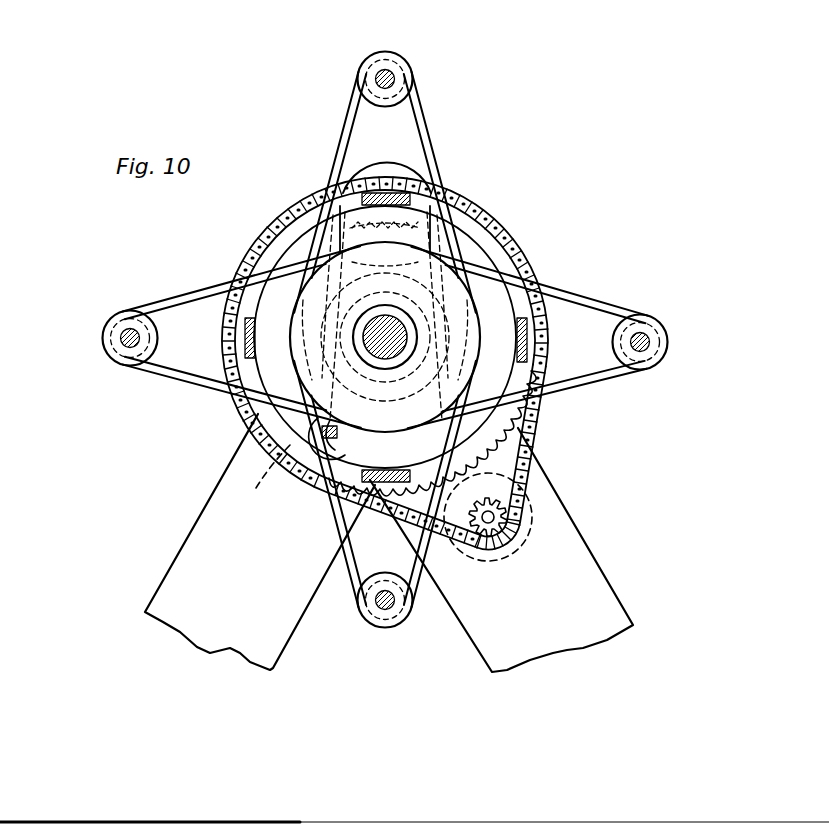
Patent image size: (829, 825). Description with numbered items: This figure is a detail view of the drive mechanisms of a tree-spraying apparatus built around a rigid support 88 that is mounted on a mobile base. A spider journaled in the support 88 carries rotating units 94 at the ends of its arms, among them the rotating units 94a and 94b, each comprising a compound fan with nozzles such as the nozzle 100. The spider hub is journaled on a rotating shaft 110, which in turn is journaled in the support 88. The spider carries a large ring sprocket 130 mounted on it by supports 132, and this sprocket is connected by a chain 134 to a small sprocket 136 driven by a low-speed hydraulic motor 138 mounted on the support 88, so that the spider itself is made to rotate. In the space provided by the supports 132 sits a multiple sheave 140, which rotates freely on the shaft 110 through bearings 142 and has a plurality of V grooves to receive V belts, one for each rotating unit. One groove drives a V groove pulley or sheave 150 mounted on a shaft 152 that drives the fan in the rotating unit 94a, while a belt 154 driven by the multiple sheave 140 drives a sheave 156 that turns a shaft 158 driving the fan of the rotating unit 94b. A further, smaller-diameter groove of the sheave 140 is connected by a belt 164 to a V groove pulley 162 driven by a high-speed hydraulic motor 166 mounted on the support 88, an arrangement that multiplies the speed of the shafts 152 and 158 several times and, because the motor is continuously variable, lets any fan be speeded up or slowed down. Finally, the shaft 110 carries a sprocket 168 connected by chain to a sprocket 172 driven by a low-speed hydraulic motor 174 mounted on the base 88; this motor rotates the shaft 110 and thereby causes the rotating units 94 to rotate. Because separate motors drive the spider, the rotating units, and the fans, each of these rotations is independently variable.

The rigid support 88 is at (173, 577).
The rotating units 94 is at (121, 386).
The rotating unit 94a is at (383, 640).
The rotating unit 94b is at (358, 68).
The nozzle 100 is at (433, 257).
The rotating shaft 110 is at (404, 350).
The large ring sprocket 130 is at (497, 427).
The supports 132 is at (228, 318).
The chain 134 is at (530, 465).
The small sprocket 136 is at (498, 502).
The low-speed hydraulic motor 138 is at (518, 543).
The multiple sheave 140 is at (312, 302).
The bearings 142 is at (412, 325).
The V groove pulley or sheave 150 is at (396, 620).
The shaft 152 is at (375, 601).
The belt 154 is at (421, 118).
The sheave 156 is at (430, 40).
The shaft 158 is at (395, 77).
The V groove pulley 162 is at (322, 432).
The belt 164 is at (399, 460).
The high-speed hydraulic motor 166 is at (260, 475).
The sprocket 168 is at (403, 293).
The sprocket 172 is at (421, 206).
The low-speed hydraulic motor 174 is at (404, 168).